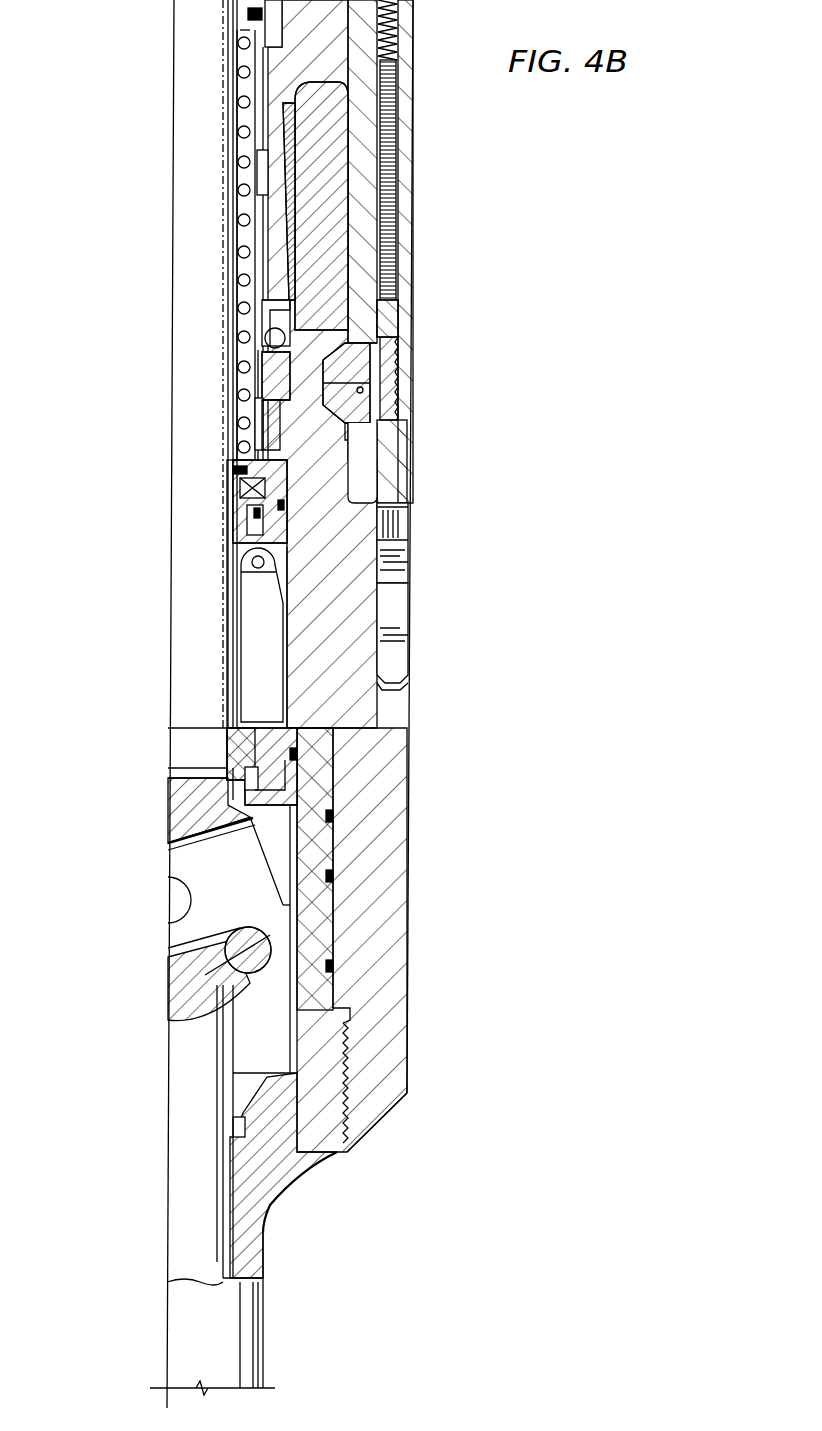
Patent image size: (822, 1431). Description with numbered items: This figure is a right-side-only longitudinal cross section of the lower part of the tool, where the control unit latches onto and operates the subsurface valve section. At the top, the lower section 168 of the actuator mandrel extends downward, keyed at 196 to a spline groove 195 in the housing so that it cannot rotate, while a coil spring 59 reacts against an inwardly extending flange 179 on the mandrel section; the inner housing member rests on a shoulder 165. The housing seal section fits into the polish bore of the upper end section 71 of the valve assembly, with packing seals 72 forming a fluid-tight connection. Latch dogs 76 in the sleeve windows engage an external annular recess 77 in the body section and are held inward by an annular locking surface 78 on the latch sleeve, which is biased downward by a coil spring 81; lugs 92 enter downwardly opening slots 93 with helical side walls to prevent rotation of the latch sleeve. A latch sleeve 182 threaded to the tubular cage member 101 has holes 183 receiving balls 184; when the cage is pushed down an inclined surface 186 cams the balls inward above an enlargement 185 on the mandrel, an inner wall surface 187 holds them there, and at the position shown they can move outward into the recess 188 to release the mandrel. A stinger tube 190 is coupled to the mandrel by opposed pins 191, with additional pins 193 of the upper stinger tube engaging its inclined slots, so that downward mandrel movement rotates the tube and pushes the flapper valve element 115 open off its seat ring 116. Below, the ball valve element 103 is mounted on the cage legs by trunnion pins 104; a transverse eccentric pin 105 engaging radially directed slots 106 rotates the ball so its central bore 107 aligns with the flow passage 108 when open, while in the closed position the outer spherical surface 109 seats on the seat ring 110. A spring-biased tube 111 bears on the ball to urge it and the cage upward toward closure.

The coil spring 59 is at (240, 277).
The upper end section of the valve assembly 71 is at (330, 145).
The packing seals 72 is at (291, 235).
The latch dogs 76 is at (356, 401).
The external annular recess 77 is at (345, 373).
The annular locking surface 78 is at (357, 394).
The coil spring 81 is at (403, 176).
The lugs 92 is at (385, 558).
The downwardly opening slots 93 is at (388, 658).
The tubular cage member 101 is at (275, 523).
The ball valve element 103 is at (335, 822).
The trunnion pins 104 is at (177, 905).
The transverse eccentric pin 105 is at (336, 967).
The radially directed slots 106 is at (335, 901).
The central bore 107 is at (255, 822).
The flow passage 108 is at (193, 697).
The outer spherical surface 109 is at (187, 777).
The seat ring 110 is at (250, 780).
The tube 111 is at (235, 1203).
The flapper valve element 115 is at (265, 643).
The seat ring 116 is at (241, 521).
The shoulder 165 is at (350, 20).
The lower section of the actuator mandrel 168 is at (243, 92).
The inwardly extending flange 179 is at (262, 447).
The latch sleeve 182 is at (254, 410).
The holes 183 is at (256, 352).
The ball 184 is at (266, 334).
The enlargement 185 is at (262, 368).
The inclined surface 186 is at (290, 321).
The inner wall surface 187 is at (262, 413).
The recess 188 is at (388, 306).
The stinger tube 190 is at (233, 607).
The opposed pins 191 is at (240, 470).
The pins 193 is at (255, 14).
The spline groove 195 is at (245, 66).
The key 196 is at (257, 172).